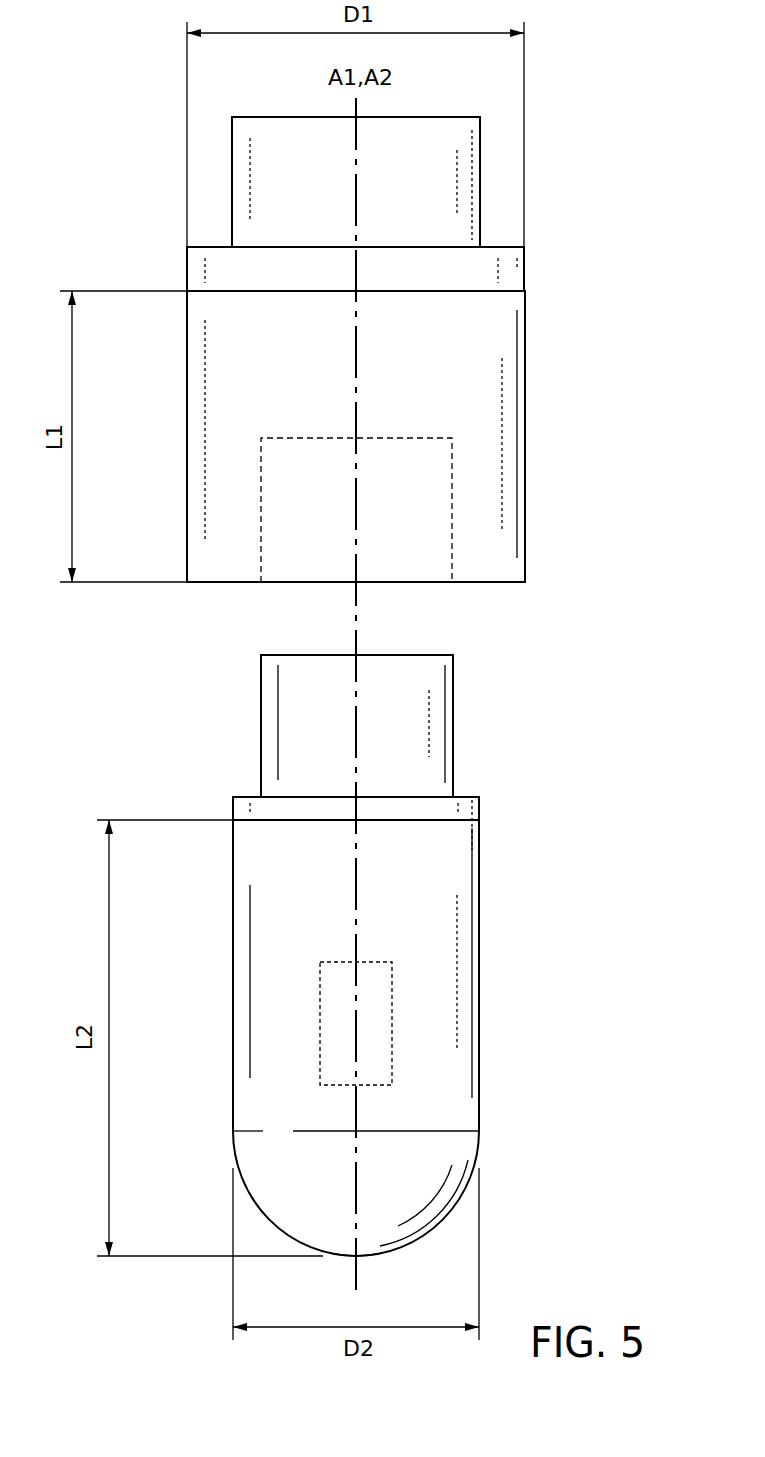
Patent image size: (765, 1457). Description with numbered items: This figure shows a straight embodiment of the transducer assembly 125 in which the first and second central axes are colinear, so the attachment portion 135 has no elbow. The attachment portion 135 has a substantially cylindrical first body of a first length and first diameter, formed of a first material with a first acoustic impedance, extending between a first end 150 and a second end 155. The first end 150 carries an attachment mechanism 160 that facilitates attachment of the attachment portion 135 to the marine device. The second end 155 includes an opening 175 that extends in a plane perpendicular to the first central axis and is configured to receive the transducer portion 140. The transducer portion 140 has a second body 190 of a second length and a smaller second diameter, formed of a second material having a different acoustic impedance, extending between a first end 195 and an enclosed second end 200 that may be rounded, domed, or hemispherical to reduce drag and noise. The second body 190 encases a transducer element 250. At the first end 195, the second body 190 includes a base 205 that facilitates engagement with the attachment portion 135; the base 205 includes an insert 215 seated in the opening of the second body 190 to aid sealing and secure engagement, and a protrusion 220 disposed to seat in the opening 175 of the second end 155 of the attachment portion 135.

The transducer assembly 125 is at (510, 1160).
The attachment portion 135 is at (185, 437).
The transducer portion 140 is at (210, 1192).
The first end 150 is at (508, 288).
The second end 155 is at (207, 585).
The attachment mechanism 160 is at (292, 112).
The opening 175 is at (293, 586).
The second body 190 is at (233, 998).
The first end 195 is at (483, 820).
The second end 200 is at (372, 1257).
The base 205 is at (231, 807).
The insert 215 is at (457, 725).
The protrusion 220 is at (408, 653).
The transducer element 250 is at (377, 960).